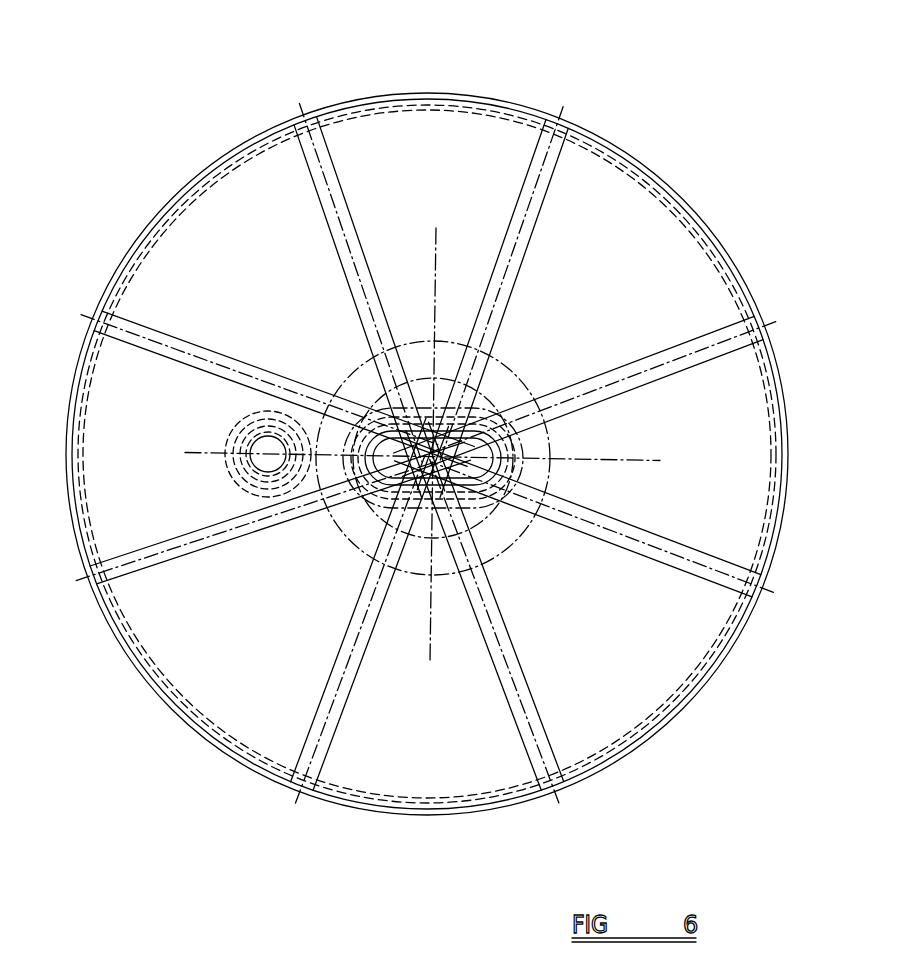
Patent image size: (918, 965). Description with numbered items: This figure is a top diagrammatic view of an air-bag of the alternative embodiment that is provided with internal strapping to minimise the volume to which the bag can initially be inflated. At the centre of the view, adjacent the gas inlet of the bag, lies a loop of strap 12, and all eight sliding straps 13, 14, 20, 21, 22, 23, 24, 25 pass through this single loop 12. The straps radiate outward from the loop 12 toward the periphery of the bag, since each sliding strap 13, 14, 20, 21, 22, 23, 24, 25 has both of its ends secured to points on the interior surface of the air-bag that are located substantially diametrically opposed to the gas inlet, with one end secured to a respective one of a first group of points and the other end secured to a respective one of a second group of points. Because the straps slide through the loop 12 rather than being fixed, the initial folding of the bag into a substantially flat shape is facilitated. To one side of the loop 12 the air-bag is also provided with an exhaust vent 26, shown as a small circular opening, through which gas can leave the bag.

The loop of strap 12 is at (402, 483).
The sliding strap 13 is at (328, 193).
The sliding strap 14 is at (540, 723).
The sliding strap 20 is at (723, 573).
The sliding strap 21 is at (707, 343).
The sliding strap 22 is at (553, 168).
The sliding strap 23 is at (158, 333).
The sliding strap 24 is at (142, 570).
The sliding strap 25 is at (315, 728).
The exhaust vent 26 is at (250, 457).